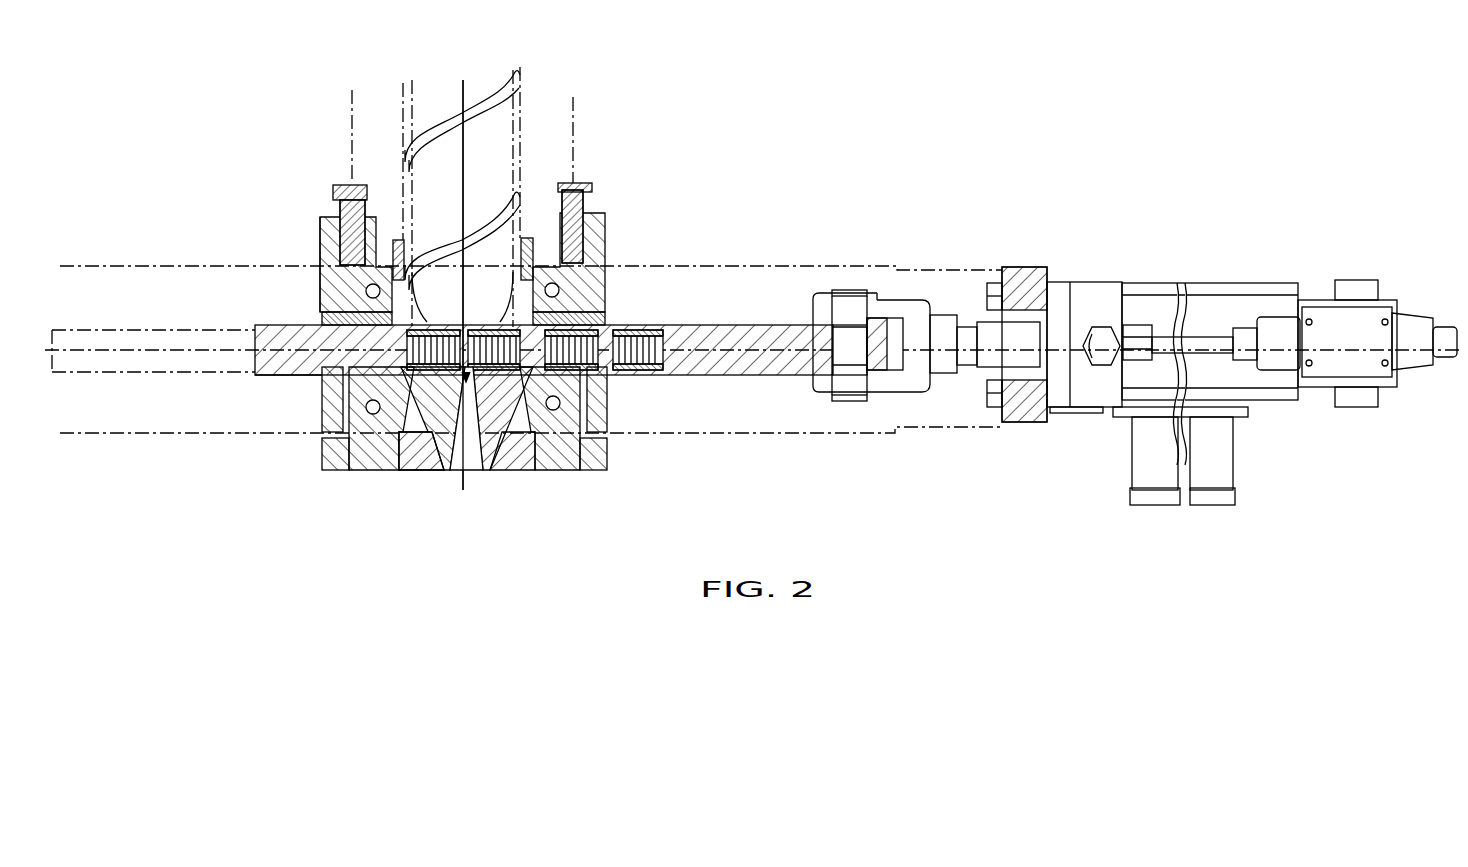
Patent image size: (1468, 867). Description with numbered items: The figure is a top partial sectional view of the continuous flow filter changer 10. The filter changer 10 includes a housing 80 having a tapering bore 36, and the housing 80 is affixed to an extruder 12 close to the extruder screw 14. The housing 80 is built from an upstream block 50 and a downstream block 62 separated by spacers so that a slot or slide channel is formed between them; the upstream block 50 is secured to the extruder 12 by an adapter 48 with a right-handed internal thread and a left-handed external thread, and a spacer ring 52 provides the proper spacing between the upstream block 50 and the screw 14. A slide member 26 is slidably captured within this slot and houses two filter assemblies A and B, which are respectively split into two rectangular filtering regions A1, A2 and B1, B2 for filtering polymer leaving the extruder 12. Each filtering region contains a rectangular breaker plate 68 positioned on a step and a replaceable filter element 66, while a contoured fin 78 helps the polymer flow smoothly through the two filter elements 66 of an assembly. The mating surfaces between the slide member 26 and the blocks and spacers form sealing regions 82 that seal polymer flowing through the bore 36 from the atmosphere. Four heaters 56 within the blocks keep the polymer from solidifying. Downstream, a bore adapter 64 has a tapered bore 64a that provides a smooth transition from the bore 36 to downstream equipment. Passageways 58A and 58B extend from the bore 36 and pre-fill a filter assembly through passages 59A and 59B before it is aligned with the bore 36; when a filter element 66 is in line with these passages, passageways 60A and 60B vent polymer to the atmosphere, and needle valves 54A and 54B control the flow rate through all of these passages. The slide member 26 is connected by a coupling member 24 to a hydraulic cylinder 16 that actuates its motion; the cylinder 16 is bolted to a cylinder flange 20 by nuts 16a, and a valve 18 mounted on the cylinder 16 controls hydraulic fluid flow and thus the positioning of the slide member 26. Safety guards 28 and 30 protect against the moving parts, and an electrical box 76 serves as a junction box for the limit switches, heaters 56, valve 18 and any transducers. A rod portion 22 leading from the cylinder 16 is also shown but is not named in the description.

The filter changer 10 is at (942, 155).
The extruder 12 is at (577, 100).
The extruder screw 14 is at (487, 103).
The hydraulic cylinder 16 is at (1105, 278).
The nuts 16a is at (987, 292).
The valve 18 is at (1413, 310).
The cylinder flange 20 is at (1015, 268).
The piston rod 22 is at (982, 368).
The coupling member 24 is at (895, 393).
The slide member 26 is at (778, 377).
The safety guard 28 is at (780, 266).
The safety guard 30 is at (130, 266).
The tapering bore 36 is at (473, 258).
The adapter 48 is at (338, 188).
The upstream block 50 is at (320, 233).
The spacer ring 52 is at (397, 240).
The needle valve 54A is at (322, 318).
The needle valve 54B is at (568, 318).
The heaters 56 is at (320, 267).
The passageway 58A is at (408, 326).
The passageway 58B is at (487, 327).
The passage 59A is at (381, 472).
The passage 59B is at (565, 472).
The passageway 60A is at (325, 442).
The passageway 60B is at (612, 435).
The downstream block 62 is at (345, 470).
The bore adapter 64 is at (510, 472).
The tapered bore 64a is at (455, 472).
The filter element 66 is at (657, 331).
The breaker plate 68 is at (650, 369).
The electrical box 76 is at (1164, 480).
The contoured fin 78 is at (470, 378).
The housing 80 is at (510, 538).
The sealing regions 82 is at (318, 378).
The filter assembly A is at (447, 372).
The filtering region A1 is at (427, 327).
The filtering region A2 is at (497, 327).
The filter assembly B is at (630, 378).
The filtering region B1 is at (587, 318).
The filtering region B2 is at (637, 331).